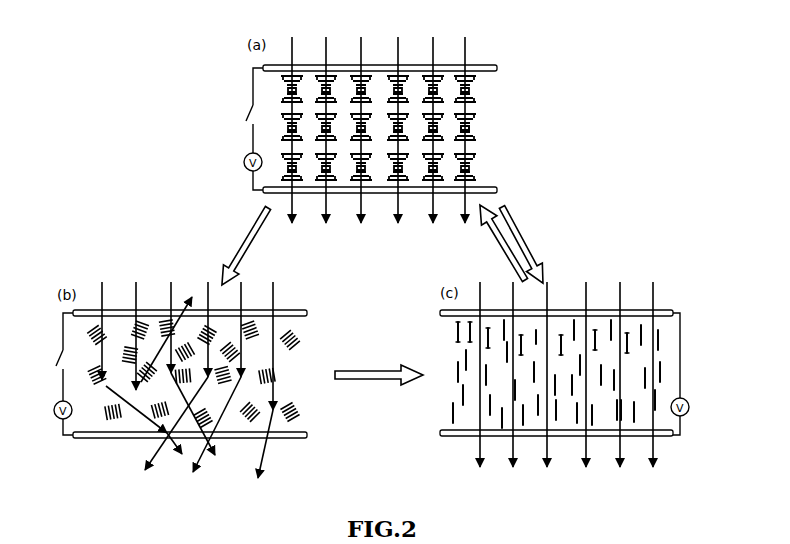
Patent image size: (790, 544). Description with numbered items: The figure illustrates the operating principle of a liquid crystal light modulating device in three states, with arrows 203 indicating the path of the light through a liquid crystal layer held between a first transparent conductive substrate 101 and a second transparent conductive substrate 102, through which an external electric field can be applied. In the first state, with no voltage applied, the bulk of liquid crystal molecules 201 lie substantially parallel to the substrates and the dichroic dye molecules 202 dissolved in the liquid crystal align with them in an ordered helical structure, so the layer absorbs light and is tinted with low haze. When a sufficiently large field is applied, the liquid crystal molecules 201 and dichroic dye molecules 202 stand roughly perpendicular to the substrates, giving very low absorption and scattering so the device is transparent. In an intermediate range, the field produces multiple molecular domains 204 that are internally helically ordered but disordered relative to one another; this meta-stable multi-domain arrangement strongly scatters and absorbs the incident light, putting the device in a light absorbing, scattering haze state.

The first transparent conductive substrate 101 is at (493, 66).
The second transparent conductive substrate 102 is at (493, 191).
The liquid crystal molecules 201 is at (482, 117).
The dichroic dye molecules 202 is at (480, 127).
The arrows indicating the path of the light 203 is at (467, 44).
The molecular domains 204 is at (293, 348).